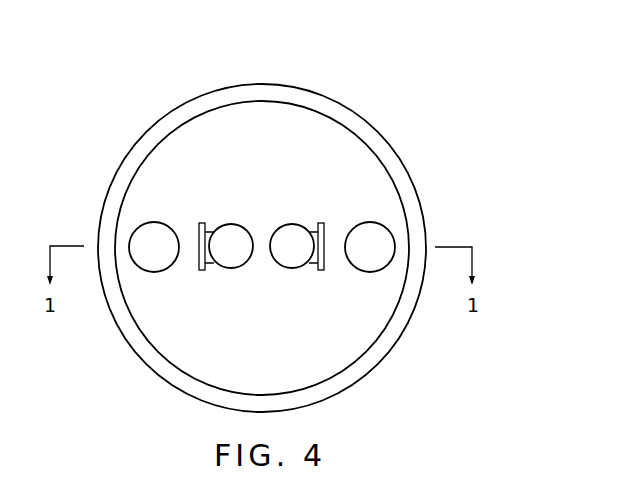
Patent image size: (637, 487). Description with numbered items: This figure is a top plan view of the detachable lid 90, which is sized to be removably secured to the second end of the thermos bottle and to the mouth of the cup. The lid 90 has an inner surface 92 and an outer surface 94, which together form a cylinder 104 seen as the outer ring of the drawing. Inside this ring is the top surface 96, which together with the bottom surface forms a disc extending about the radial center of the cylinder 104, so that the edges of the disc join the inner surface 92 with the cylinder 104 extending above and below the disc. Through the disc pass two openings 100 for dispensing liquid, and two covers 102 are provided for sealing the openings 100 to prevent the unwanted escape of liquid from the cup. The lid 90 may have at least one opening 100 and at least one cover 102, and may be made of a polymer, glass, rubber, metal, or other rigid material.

The lid 90 is at (98, 134).
The inner surface 92 is at (372, 150).
The outer surface 94 is at (404, 330).
The top surface 96 is at (281, 333).
The openings 100 is at (152, 222).
The covers 102 is at (232, 224).
The cylinder 104 is at (120, 345).